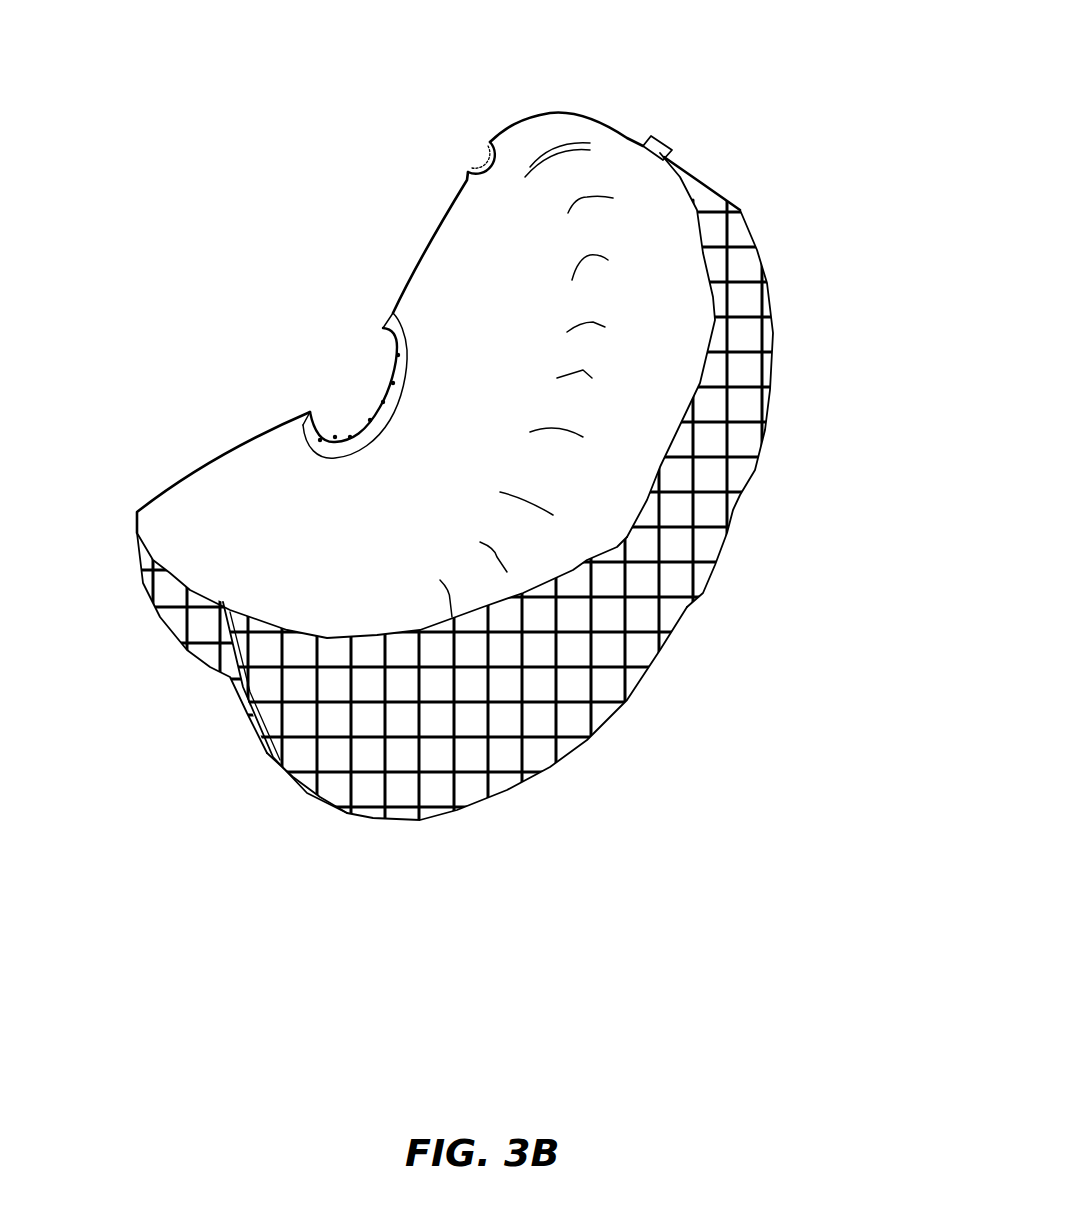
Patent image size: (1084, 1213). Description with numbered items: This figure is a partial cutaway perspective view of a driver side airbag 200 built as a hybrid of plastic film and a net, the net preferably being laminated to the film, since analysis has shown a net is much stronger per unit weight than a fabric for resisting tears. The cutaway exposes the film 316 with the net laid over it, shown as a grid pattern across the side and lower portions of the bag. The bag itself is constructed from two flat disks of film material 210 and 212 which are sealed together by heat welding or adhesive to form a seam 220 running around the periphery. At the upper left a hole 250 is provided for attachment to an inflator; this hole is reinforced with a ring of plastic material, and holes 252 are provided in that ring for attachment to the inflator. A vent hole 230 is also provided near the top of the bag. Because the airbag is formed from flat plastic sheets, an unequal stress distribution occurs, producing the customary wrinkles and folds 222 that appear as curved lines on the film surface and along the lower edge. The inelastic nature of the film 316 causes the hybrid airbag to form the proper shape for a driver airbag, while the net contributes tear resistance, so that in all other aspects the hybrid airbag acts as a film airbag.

The driver side airbag 200 is at (670, 663).
The flat disk of film material 210 is at (733, 300).
The flat disk of film material 212 is at (537, 138).
The seam 220 is at (663, 151).
The wrinkles and folds 222 is at (587, 740).
The vent hole 230 is at (473, 155).
The hole 250 is at (355, 400).
The holes 252 is at (387, 353).
The film 316 is at (313, 727).